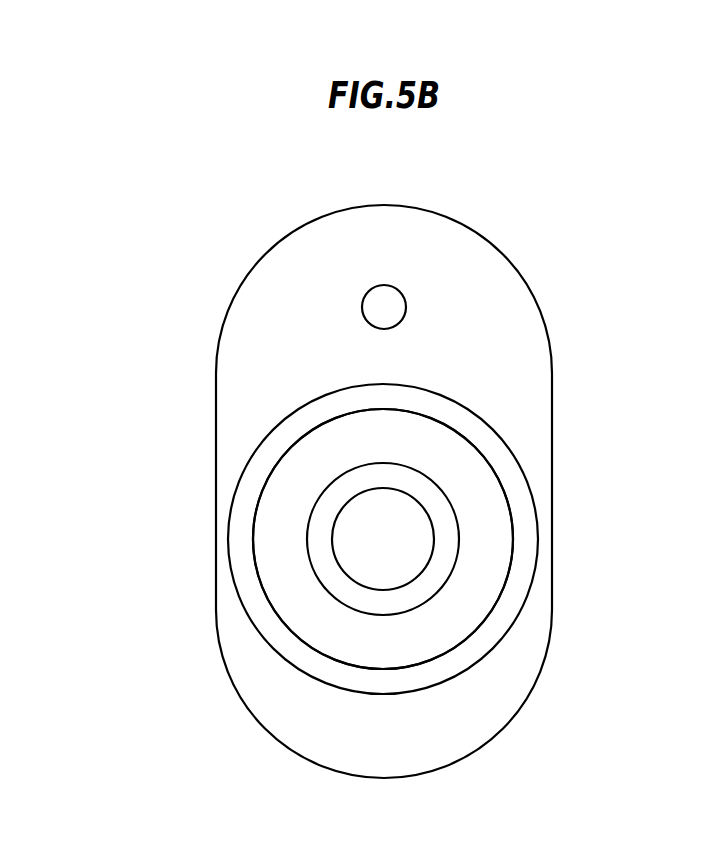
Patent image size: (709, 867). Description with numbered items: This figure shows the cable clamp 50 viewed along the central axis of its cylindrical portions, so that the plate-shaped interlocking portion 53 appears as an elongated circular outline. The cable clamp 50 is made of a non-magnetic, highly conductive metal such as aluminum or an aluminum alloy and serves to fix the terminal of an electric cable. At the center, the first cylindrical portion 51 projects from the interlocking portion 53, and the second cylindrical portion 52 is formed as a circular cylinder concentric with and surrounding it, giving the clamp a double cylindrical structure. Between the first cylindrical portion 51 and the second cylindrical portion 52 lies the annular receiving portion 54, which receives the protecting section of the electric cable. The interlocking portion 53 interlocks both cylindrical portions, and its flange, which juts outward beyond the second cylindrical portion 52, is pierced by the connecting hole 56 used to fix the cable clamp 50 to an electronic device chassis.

The cable clamp 50 is at (615, 182).
The first cylindrical portion 51 is at (437, 573).
The second cylindrical portion 52 is at (262, 617).
The interlocking portion 53 is at (480, 287).
The receiving portion 54 is at (300, 477).
The connecting hole 56 is at (378, 298).